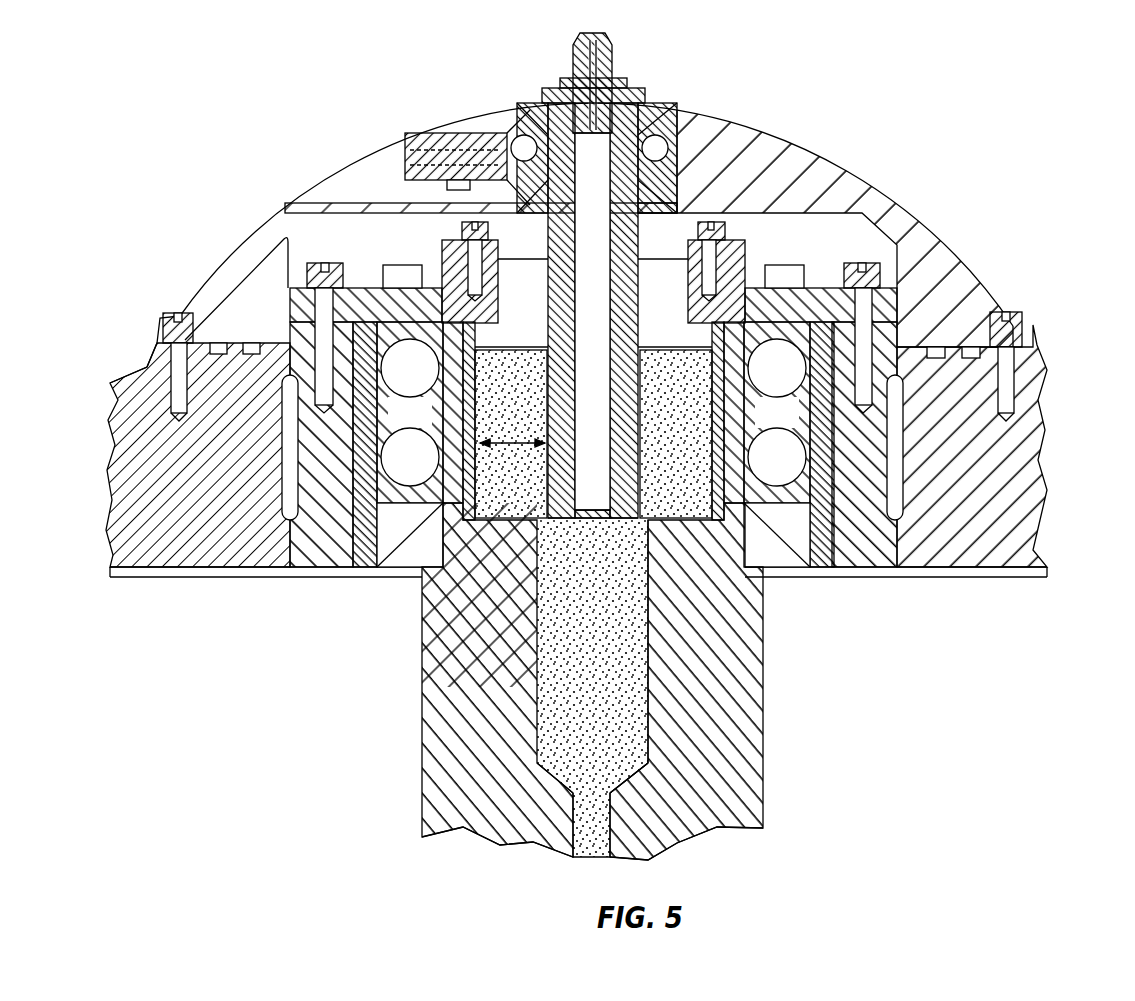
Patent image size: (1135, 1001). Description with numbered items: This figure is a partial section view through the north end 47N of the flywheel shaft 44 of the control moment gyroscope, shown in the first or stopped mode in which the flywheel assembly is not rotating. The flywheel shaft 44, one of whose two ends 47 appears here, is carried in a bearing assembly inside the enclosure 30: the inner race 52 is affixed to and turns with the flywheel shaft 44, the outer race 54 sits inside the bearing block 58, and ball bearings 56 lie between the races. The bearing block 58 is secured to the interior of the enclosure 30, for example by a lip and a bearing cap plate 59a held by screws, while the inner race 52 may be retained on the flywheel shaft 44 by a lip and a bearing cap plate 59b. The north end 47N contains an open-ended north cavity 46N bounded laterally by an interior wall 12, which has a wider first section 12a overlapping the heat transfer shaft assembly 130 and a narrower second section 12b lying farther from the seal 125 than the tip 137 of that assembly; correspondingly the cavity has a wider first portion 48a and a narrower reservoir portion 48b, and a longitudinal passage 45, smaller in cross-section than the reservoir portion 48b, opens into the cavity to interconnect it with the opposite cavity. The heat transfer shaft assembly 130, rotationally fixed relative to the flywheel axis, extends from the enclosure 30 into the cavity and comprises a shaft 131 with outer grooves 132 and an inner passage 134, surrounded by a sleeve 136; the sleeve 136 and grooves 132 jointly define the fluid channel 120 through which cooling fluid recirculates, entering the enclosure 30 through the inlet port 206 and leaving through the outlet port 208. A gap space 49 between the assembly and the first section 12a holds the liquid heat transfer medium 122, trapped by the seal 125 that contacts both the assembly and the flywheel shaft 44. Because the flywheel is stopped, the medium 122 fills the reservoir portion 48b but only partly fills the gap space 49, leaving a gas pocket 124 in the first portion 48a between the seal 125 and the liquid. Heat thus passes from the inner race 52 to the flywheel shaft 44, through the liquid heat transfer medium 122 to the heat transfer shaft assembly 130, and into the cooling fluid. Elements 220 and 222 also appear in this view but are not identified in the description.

The interior wall 12 is at (609, 241).
The first section of interior wall 12a is at (912, 340).
The second section of interior wall 12b is at (637, 703).
The enclosure 30 is at (155, 427).
The flywheel shaft 44 is at (445, 548).
The longitudinal passage 45 is at (578, 835).
The north cavity 46N is at (735, 262).
The end of flywheel shaft 47 is at (512, 432).
The north end 47N is at (620, 528).
The cavity first portion 48a is at (487, 372).
The cavity second portion (reservoir portion) 48b is at (570, 733).
The gap space 49 is at (847, 290).
The inner race 52 is at (430, 500).
The outer race 54 is at (367, 492).
The ball bearings 56 is at (835, 560).
The bearing block 58 is at (307, 548).
The bearing cap plate 59a is at (688, 388).
The bearing cap plate 59b is at (700, 320).
The fluid channel 120 is at (525, 335).
The liquid heat transfer medium 122 is at (443, 322).
The gas pocket 124 is at (520, 283).
The seal 125 is at (662, 233).
The heat transfer shaft assembly 130 is at (665, 540).
The shaft 131 is at (700, 520).
The outer groove 132 is at (710, 480).
The inner passage 134 is at (523, 475).
The sleeve 136 is at (593, 495).
The tip 137 is at (560, 505).
The inlet port 206 is at (453, 132).
The outlet port 208 is at (610, 67).
The bolt 220 is at (893, 403).
The slot 222 is at (893, 490).